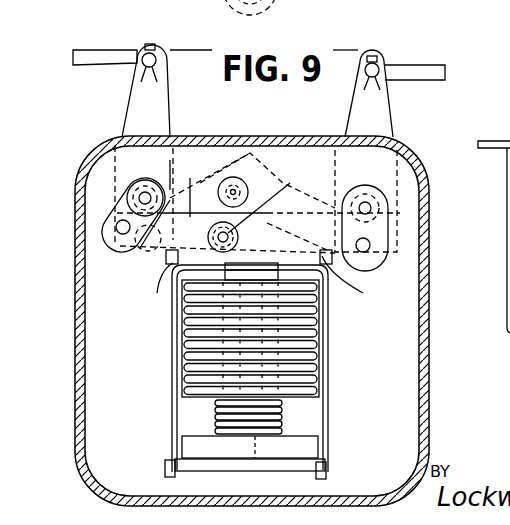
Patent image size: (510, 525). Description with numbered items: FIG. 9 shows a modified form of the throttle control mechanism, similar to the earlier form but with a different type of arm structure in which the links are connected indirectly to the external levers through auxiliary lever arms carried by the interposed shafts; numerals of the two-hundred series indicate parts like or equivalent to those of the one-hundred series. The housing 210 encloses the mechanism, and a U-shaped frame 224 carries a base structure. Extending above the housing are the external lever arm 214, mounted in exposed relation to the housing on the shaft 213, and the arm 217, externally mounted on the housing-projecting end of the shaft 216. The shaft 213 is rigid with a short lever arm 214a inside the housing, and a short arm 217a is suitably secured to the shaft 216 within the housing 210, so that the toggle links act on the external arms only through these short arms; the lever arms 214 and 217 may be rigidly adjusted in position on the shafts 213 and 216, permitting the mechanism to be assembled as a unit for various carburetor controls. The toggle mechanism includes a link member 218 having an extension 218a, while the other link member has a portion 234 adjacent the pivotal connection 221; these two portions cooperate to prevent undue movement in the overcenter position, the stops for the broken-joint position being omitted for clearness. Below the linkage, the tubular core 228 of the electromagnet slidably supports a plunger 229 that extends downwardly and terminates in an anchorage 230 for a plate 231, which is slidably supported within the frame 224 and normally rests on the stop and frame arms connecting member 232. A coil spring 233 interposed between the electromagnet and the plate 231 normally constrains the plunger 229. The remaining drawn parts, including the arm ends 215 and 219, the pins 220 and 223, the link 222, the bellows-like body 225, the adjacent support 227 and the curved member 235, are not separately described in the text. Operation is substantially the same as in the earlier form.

The housing 210 is at (300, 138).
The shaft 213 is at (140, 192).
The lever arm 214 is at (140, 100).
The short lever arm 214a is at (118, 213).
The left arm 215 is at (103, 55).
The shaft 216 is at (368, 205).
The arm 217 is at (385, 113).
The short arm 217a is at (392, 214).
The link member 218 is at (213, 183).
The extension 218a is at (255, 158).
The right arm 219 is at (420, 70).
The pin 220 is at (120, 235).
The pivotal connection 221 is at (282, 190).
The link 222 is at (300, 222).
The pin 223 is at (372, 247).
The frame 224 is at (170, 395).
The bellows 225 is at (310, 341).
The support 227 is at (488, 141).
The tubular core 228 is at (283, 347).
The plunger 229 is at (285, 373).
The anchorage 230 is at (238, 447).
The plate 231 is at (293, 458).
The stop and frame arms connecting member 232 is at (225, 467).
The coil spring 233 is at (285, 420).
The portion of link member 234 is at (157, 289).
The connecting line 235 is at (360, 280).